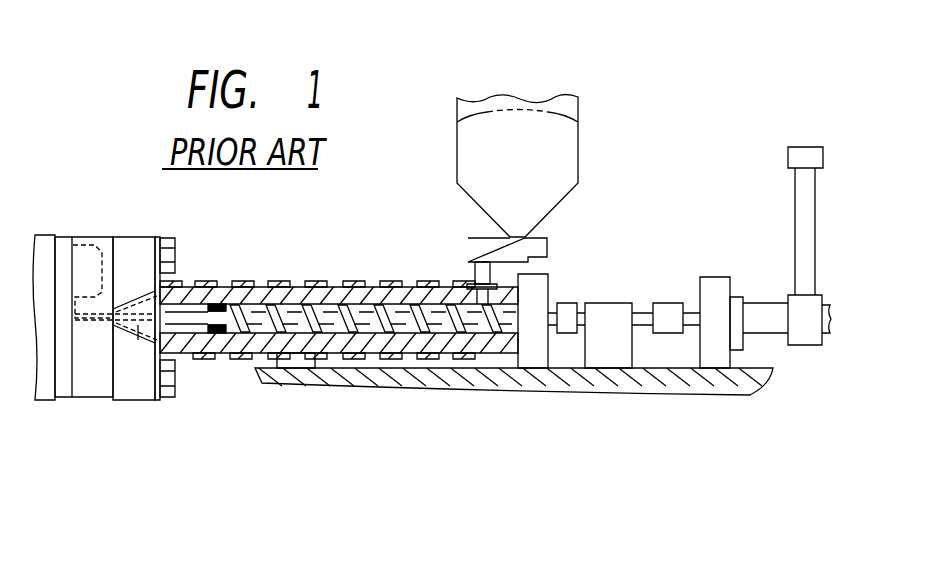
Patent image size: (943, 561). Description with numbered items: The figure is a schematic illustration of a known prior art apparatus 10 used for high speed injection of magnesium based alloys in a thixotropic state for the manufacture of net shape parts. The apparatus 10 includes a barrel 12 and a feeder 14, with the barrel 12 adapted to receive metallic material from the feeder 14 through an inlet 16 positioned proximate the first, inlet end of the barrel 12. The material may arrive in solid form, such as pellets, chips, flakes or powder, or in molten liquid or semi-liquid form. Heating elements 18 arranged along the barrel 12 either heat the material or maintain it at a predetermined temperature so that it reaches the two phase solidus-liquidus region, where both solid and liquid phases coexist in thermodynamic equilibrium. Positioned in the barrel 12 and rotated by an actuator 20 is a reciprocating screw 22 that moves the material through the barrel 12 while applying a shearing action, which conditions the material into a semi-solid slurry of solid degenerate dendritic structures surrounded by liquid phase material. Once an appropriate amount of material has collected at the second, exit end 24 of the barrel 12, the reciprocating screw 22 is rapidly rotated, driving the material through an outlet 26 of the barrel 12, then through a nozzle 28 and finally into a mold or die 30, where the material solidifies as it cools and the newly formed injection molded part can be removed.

The prior art apparatus 10 is at (715, 88).
The barrel 12 is at (302, 287).
The feeder 14 is at (527, 168).
The inlet 16 is at (473, 273).
The heating elements 18 is at (237, 283).
The actuator 20 is at (775, 317).
The reciprocating screw 22 is at (319, 328).
The second (exit) end 24 is at (178, 325).
The outlet 26 is at (158, 319).
The nozzle 28 is at (138, 330).
The mold or die 30 is at (140, 372).